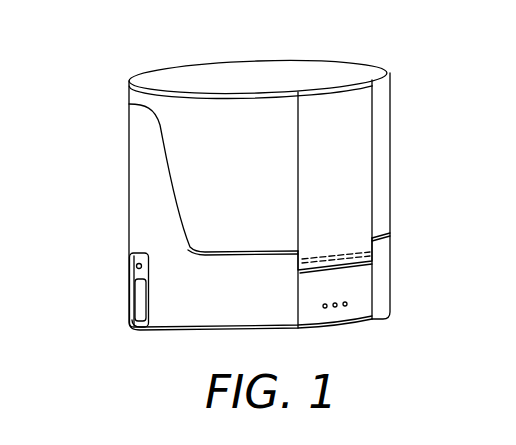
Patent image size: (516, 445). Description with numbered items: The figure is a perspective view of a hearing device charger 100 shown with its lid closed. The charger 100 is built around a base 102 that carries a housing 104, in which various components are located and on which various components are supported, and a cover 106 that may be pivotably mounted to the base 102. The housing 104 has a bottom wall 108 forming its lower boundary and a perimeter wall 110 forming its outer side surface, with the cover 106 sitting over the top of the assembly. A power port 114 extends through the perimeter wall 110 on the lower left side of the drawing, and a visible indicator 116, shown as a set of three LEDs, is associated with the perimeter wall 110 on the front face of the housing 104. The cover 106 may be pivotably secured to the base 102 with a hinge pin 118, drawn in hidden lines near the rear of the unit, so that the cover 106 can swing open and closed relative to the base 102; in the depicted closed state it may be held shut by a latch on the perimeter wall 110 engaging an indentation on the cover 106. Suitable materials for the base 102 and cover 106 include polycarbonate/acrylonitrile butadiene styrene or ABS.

The hearing device charger 100 is at (206, 34).
The base 102 is at (114, 184).
The housing 104 is at (396, 288).
The cover 106 is at (247, 63).
The bottom wall 108 is at (155, 334).
The perimeter wall 110 is at (252, 306).
The power port 114 is at (138, 293).
The visible indicator 116 is at (348, 310).
The hinge pin 118 is at (335, 252).